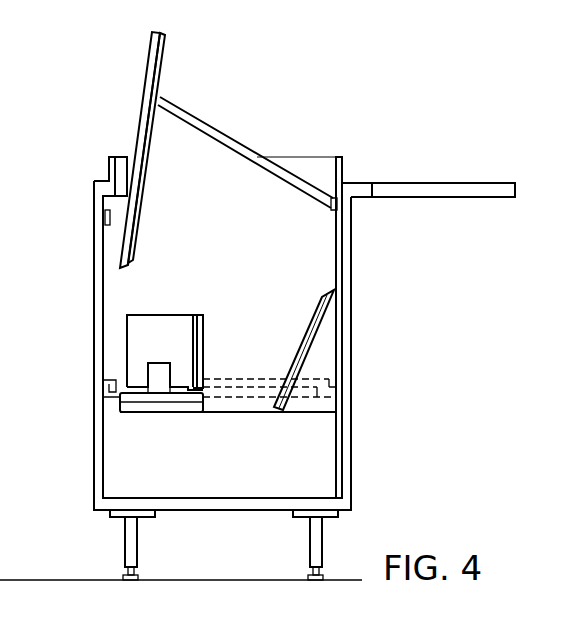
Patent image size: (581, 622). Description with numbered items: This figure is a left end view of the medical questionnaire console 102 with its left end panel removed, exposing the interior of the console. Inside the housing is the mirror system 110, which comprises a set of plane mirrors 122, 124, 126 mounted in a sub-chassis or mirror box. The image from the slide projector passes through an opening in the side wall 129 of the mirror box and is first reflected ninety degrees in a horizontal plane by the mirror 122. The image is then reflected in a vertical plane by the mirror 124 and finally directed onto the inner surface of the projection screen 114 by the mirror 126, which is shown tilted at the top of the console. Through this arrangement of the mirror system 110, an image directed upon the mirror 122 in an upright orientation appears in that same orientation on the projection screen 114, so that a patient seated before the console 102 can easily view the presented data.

The medical questionnaire console 102 is at (235, 124).
The mirror system 110 is at (306, 256).
The projection screen 114 is at (217, 141).
The mirror 122 is at (172, 340).
The mirror 124 is at (300, 337).
The mirror 126 is at (142, 182).
The side wall 129 is at (253, 260).